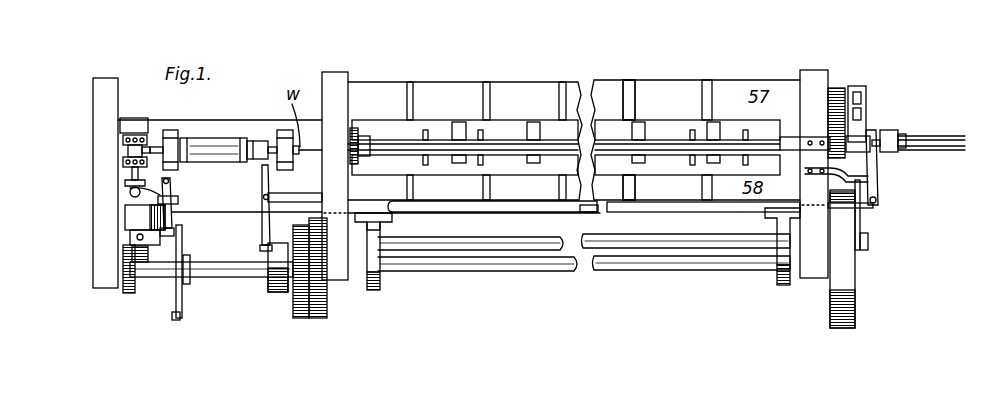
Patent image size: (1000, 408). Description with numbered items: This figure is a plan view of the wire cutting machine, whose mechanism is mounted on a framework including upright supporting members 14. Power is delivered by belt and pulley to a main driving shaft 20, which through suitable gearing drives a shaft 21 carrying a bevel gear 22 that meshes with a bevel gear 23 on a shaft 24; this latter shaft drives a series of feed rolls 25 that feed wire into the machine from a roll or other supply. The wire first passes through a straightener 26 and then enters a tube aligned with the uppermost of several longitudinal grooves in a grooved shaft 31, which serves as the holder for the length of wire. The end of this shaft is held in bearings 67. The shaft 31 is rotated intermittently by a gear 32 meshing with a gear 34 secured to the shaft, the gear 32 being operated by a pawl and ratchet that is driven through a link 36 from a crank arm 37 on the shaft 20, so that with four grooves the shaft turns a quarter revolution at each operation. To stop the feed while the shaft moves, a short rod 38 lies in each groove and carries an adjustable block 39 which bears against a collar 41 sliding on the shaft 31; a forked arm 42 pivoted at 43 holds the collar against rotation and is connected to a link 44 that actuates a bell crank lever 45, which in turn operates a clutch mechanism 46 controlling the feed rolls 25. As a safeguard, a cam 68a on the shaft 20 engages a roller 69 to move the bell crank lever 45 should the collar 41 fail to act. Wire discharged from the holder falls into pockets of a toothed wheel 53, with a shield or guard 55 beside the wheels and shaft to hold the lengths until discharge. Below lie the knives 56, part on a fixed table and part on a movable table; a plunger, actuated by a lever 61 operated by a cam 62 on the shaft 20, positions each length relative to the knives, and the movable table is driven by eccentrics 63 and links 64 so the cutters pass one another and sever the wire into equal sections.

The upright supporting members 14 is at (334, 86).
The main driving shaft 20 is at (672, 265).
The shaft 21 is at (222, 277).
The bevel gear 22 is at (124, 292).
The bevel gear 23 is at (147, 270).
The shaft 24 is at (135, 172).
The feed rolls 25 is at (128, 150).
The straightener 26 is at (208, 140).
The grooved shaft 31 is at (500, 140).
The gear 32 is at (840, 92).
The gear 34 is at (852, 132).
The link 36 is at (858, 223).
The crank arm 37 is at (868, 243).
The rods 38 is at (935, 147).
The block 39 is at (866, 158).
The collar 41 is at (905, 150).
The forked arm 42 is at (876, 188).
The pivot 43 is at (872, 170).
The link 44 is at (628, 212).
The bell crank lever 45 is at (172, 204).
The clutch mechanism 46 is at (130, 200).
The toothed wheel 53 is at (426, 133).
The shield or guard 55 is at (640, 130).
The knives 56 is at (628, 90).
The lever 61 is at (264, 228).
The cam 62 is at (278, 292).
The eccentrics 63 is at (373, 290).
The links 64 is at (375, 240).
The bearings 67 is at (352, 140).
The cam 68a is at (177, 320).
The roller 69 is at (165, 226).